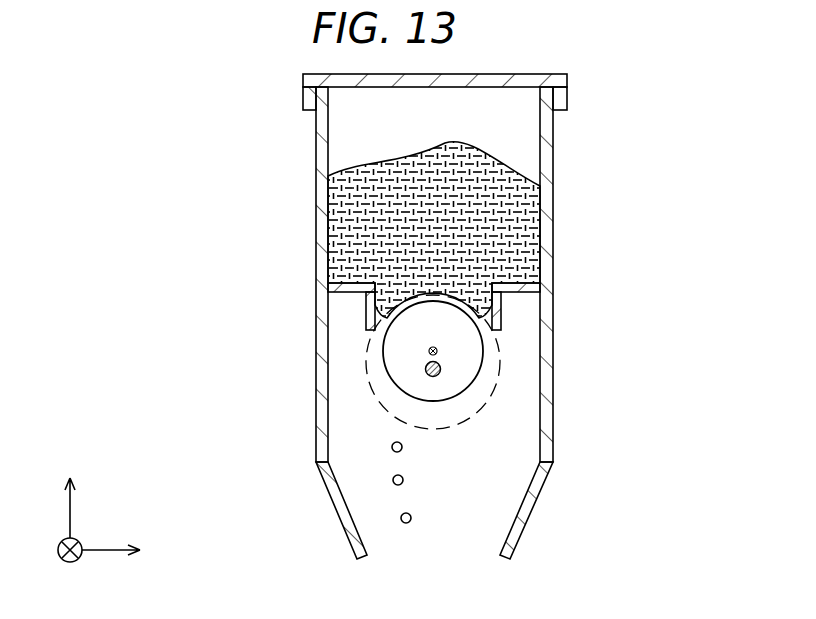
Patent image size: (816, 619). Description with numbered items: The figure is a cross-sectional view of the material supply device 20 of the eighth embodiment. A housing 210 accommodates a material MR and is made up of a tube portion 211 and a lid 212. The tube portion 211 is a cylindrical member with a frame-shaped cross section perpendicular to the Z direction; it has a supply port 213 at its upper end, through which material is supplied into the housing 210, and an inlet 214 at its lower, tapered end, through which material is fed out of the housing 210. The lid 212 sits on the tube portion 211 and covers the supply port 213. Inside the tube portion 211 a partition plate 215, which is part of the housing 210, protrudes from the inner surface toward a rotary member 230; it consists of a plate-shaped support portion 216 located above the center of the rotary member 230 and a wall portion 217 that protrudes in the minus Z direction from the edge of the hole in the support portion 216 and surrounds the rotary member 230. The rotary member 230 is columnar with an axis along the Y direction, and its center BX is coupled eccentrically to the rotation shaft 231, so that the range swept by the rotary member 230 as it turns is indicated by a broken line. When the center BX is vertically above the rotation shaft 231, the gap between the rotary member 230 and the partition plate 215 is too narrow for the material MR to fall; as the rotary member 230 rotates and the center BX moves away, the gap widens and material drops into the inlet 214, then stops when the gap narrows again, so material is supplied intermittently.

The material supply device 20 is at (128, 98).
The housing 210 is at (655, 77).
The tube portion 211 is at (553, 130).
The lid 212 is at (567, 90).
The supply port 213 is at (332, 105).
The inlet 214 is at (363, 546).
The partition plate 215 is at (613, 285).
The support portion 216 is at (517, 290).
The wall portion 217 is at (502, 318).
The rotary member 230 is at (460, 372).
The rotation shaft 231 is at (435, 376).
The material MR is at (345, 212).
The center BX is at (440, 355).